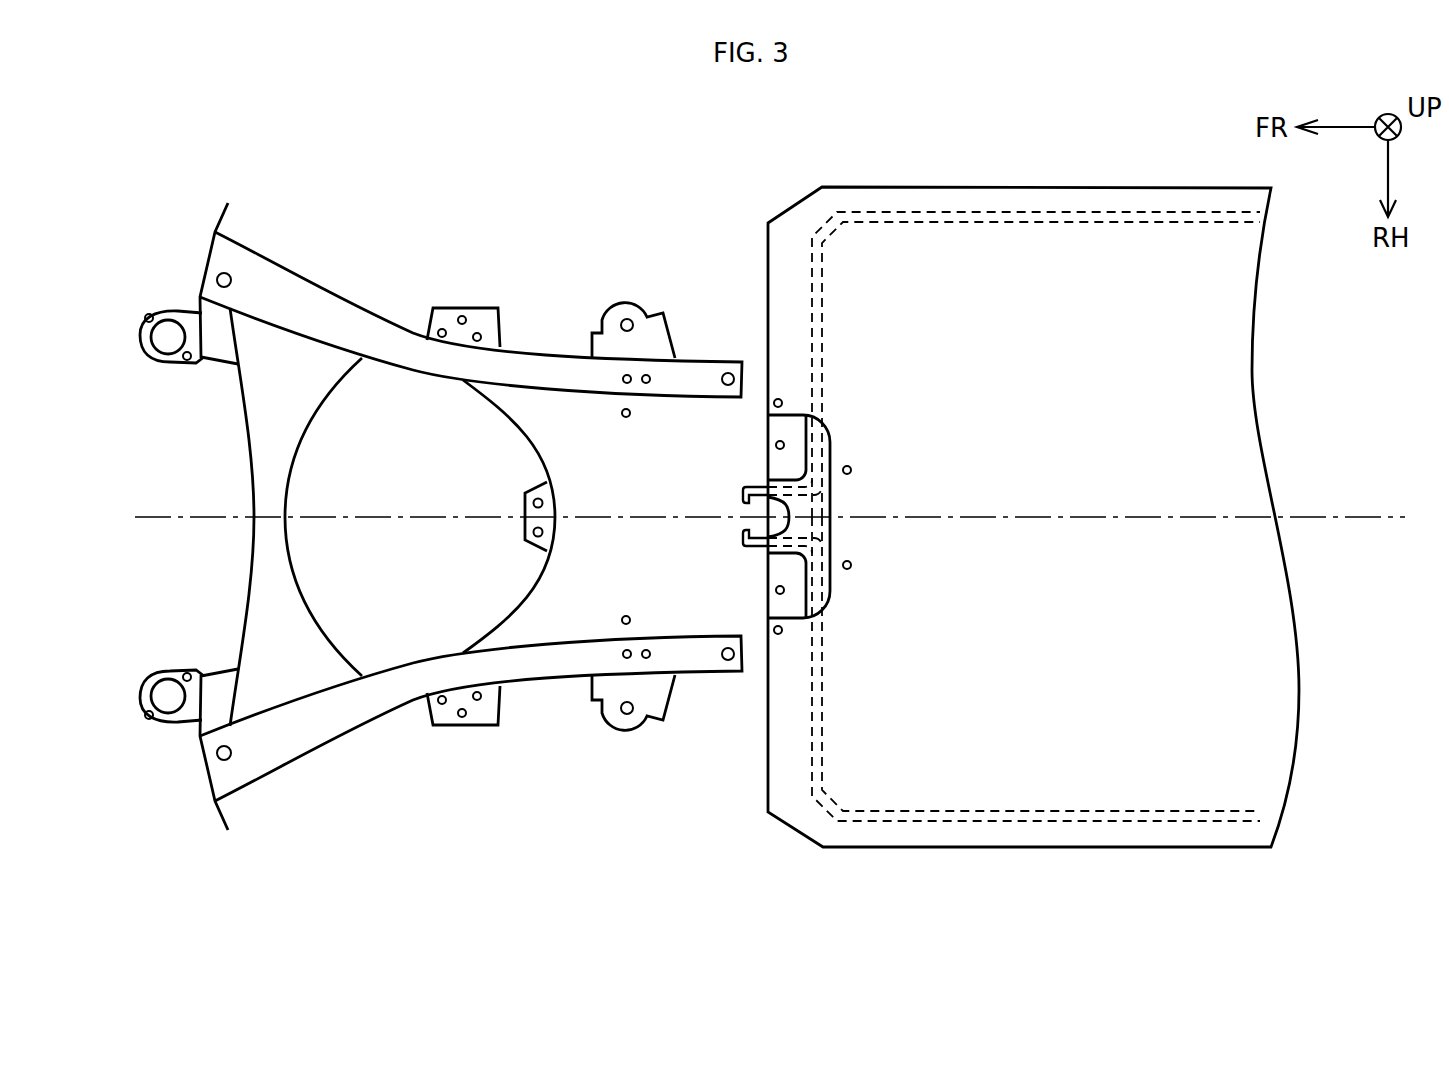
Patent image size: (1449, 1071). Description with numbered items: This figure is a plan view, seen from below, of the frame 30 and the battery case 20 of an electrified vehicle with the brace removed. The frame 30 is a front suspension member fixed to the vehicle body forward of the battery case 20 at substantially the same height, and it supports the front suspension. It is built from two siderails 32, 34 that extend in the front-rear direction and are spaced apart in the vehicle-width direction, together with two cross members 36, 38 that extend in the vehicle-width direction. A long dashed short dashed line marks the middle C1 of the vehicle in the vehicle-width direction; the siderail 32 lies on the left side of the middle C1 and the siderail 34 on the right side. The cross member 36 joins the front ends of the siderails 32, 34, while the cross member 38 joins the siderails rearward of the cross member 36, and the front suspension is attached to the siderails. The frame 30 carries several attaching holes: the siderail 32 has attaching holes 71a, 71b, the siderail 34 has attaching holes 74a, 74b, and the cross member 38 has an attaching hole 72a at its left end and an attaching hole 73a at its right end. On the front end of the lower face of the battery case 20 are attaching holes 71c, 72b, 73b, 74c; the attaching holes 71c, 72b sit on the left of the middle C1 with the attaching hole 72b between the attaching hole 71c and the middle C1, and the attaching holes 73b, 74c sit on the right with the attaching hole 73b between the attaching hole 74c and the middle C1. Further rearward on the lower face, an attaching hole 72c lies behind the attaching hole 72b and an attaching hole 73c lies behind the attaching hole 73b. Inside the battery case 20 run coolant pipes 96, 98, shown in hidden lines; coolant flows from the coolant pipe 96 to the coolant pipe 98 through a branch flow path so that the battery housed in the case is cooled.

The battery case 20 is at (1245, 577).
The frame 30 is at (215, 568).
The siderail 32 is at (383, 345).
The siderail 34 is at (383, 683).
The cross member 36 is at (267, 452).
The cross member 38 is at (553, 607).
The attaching hole 71a is at (623, 379).
The attaching hole 71b is at (647, 375).
The attaching hole 71c is at (782, 401).
The attaching hole 72a is at (630, 413).
The attaching hole 72b is at (784, 443).
The attaching hole 72c is at (850, 467).
The attaching hole 73a is at (630, 620).
The attaching hole 73b is at (784, 592).
The attaching hole 73c is at (850, 568).
The attaching hole 74a is at (623, 654).
The attaching hole 74b is at (647, 658).
The attaching hole 74c is at (782, 632).
The coolant pipe 96 is at (1010, 220).
The coolant pipe 98 is at (1010, 817).
The middle C1 is at (1360, 514).